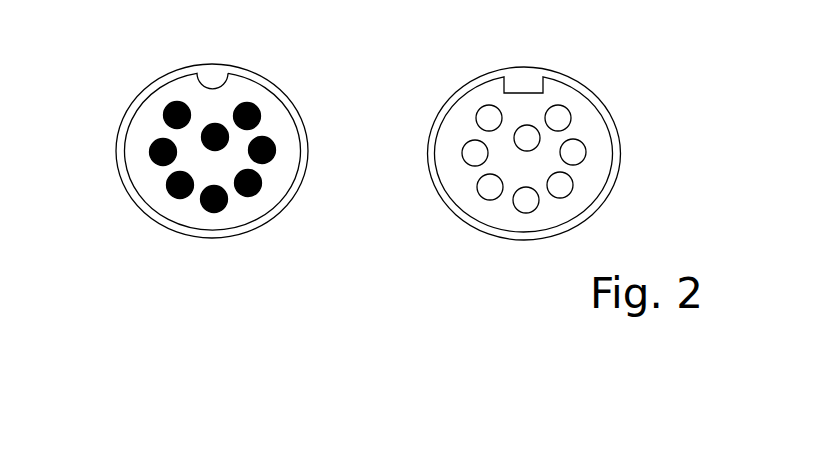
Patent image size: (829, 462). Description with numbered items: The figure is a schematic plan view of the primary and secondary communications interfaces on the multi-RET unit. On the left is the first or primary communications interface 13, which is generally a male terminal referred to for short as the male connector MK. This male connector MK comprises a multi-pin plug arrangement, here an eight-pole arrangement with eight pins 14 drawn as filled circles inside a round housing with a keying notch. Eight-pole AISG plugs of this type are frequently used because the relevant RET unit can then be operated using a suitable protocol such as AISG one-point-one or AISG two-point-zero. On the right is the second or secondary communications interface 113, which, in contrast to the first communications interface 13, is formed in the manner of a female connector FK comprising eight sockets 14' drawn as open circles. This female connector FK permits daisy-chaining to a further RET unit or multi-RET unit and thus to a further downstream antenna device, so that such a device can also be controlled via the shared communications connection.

The first or primary communications interface 13 is at (250, 249).
The pins 14 is at (155, 165).
The male connector MK is at (275, 118).
The second or secondary communications interface 113 is at (480, 246).
The female connector FK is at (563, 92).
The sockets 14' is at (591, 158).